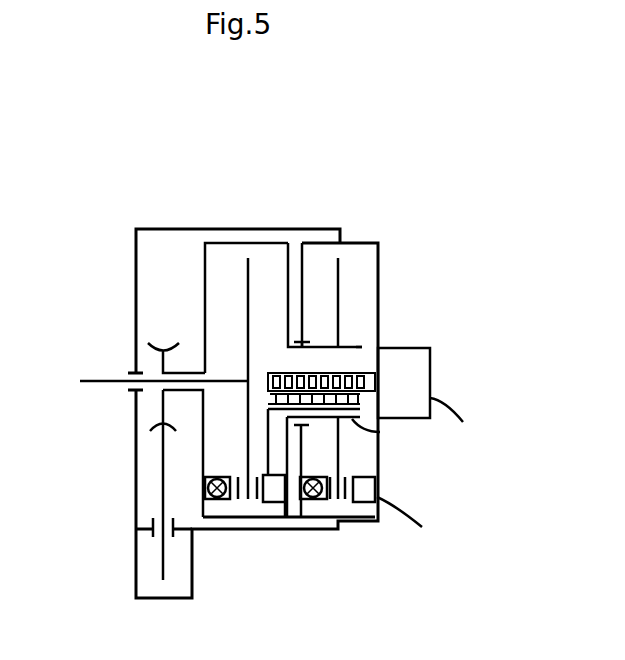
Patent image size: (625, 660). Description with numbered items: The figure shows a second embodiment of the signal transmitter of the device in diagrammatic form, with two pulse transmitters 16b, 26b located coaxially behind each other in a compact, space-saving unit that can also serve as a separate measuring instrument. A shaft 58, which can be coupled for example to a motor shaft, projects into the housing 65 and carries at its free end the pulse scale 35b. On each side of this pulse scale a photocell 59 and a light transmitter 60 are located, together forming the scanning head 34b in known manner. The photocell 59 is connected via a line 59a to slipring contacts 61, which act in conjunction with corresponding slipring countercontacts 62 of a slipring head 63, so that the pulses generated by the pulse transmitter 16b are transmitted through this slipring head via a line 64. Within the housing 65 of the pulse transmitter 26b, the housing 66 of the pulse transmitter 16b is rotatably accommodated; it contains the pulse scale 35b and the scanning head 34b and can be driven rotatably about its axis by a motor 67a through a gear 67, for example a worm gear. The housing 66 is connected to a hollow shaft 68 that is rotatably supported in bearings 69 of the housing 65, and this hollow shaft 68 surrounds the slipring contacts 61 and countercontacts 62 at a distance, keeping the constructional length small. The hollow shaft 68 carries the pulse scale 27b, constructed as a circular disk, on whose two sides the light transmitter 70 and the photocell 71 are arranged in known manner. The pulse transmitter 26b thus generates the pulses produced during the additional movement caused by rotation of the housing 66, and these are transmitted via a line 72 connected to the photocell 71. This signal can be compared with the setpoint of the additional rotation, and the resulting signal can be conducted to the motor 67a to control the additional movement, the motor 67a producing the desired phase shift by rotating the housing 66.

The pulse transmitter 16b is at (212, 252).
The pulse transmitter 26b is at (315, 262).
The pulse scale 27b is at (286, 270).
The scanning head 34b is at (245, 532).
The pulse scale 35b is at (245, 270).
The shaft 58 is at (85, 380).
The photocell 59 is at (272, 507).
The line 59a is at (268, 409).
The light transmitter 60 is at (218, 512).
The slipring contacts 61 is at (358, 398).
The slipring countercontacts 62 is at (333, 373).
The slipring head 63 is at (413, 358).
The line 64 is at (455, 413).
The housing 65 is at (380, 272).
The housing 66 is at (204, 258).
The gear 67 is at (155, 431).
The motor 67a is at (147, 558).
The hollow shaft 68 is at (380, 432).
The bearings 69 is at (302, 342).
The light transmitter 70 is at (318, 532).
The photocell 71 is at (367, 483).
The line 72 is at (422, 527).